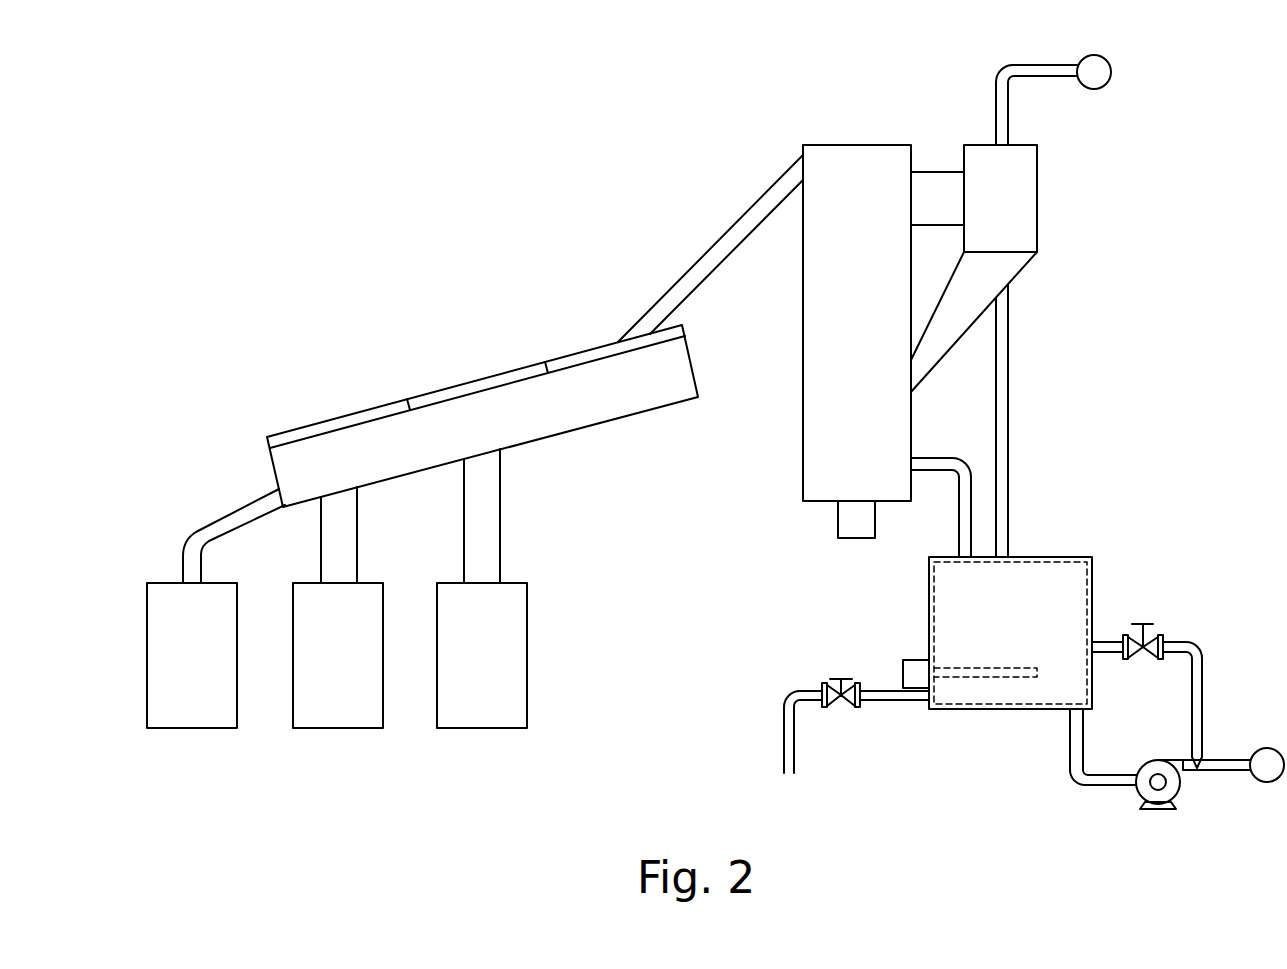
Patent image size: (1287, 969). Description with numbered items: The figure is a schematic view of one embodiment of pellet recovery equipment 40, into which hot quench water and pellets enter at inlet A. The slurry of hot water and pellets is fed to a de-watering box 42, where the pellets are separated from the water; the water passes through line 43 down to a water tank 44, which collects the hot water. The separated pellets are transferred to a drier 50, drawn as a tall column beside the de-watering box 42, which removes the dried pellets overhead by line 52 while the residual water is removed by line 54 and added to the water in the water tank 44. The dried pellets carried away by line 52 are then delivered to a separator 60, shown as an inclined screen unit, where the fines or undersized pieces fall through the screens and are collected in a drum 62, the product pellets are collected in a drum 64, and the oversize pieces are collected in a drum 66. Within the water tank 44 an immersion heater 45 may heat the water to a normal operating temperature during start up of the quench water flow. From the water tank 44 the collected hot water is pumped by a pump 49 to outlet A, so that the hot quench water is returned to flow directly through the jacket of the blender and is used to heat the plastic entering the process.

The pellet recovery equipment 40 is at (738, 490).
The de-watering box 42 is at (1020, 190).
The line 43 is at (998, 372).
The water tank 44 is at (993, 634).
The immersion heater 45 is at (1000, 672).
The pump 49 is at (1165, 793).
The drier 50 is at (835, 329).
The line 52 is at (726, 246).
The line 54 is at (927, 463).
The separator 60 is at (468, 413).
The drum 62 is at (483, 663).
The drum 64 is at (331, 683).
The drum 66 is at (182, 683).